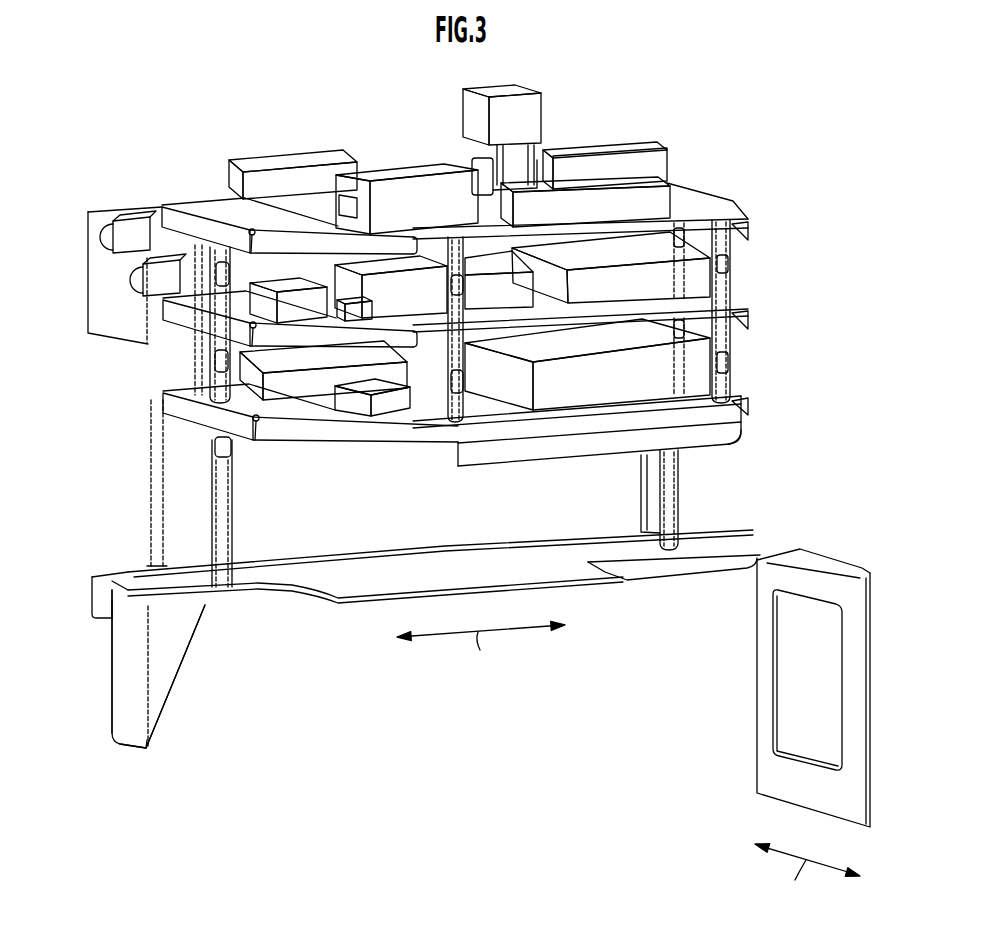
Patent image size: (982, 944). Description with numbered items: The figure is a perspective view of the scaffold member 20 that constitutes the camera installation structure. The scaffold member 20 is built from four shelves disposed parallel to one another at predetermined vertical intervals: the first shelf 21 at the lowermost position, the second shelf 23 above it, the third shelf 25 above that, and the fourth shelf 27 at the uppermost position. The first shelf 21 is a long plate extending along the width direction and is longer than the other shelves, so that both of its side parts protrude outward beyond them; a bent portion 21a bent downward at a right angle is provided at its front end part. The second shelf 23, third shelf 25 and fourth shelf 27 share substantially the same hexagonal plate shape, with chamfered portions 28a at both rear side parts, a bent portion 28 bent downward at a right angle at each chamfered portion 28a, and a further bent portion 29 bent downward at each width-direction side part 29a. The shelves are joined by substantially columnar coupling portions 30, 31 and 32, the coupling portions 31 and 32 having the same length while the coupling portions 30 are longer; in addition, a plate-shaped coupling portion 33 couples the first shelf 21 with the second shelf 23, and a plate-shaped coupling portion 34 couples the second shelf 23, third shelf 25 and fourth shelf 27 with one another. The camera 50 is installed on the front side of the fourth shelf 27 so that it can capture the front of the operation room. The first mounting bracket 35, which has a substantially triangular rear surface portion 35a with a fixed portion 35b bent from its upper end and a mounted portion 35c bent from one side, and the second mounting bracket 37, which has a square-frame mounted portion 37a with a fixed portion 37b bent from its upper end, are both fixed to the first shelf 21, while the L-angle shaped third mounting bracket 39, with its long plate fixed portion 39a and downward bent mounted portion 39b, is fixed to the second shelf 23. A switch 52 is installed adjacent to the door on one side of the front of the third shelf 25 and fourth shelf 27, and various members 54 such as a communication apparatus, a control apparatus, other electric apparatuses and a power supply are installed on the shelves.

The scaffold member 20 is at (690, 158).
The first shelf 21 is at (375, 586).
The bent portion 21a is at (670, 569).
The second shelf 23 is at (737, 392).
The third shelf 25 is at (748, 310).
The fourth shelf 27 is at (707, 203).
The bent portion 28 is at (256, 230).
The chamfered portion 28a is at (313, 232).
The bent portion 29 is at (163, 214).
The side part 29a is at (207, 229).
The coupling portion 30 is at (688, 233).
The coupling portion 31 is at (212, 370).
The coupling portion 32 is at (210, 222).
The coupling portion 33 is at (163, 513).
The coupling portion 34 is at (197, 352).
The first mounting bracket 35 is at (155, 662).
The rear surface portion 35a is at (170, 673).
The fixed portion 35b is at (125, 588).
The mounted portion 35c is at (113, 707).
The second mounting bracket 37 is at (765, 667).
The mounted portion 37a is at (761, 752).
The fixed portion 37b is at (830, 558).
The third mounting bracket 39 is at (625, 450).
The fixed portion 39a is at (443, 433).
The mounted portion 39b is at (730, 444).
The camera 50 is at (533, 102).
The switch 52 is at (128, 216).
The various members 54 is at (370, 157).